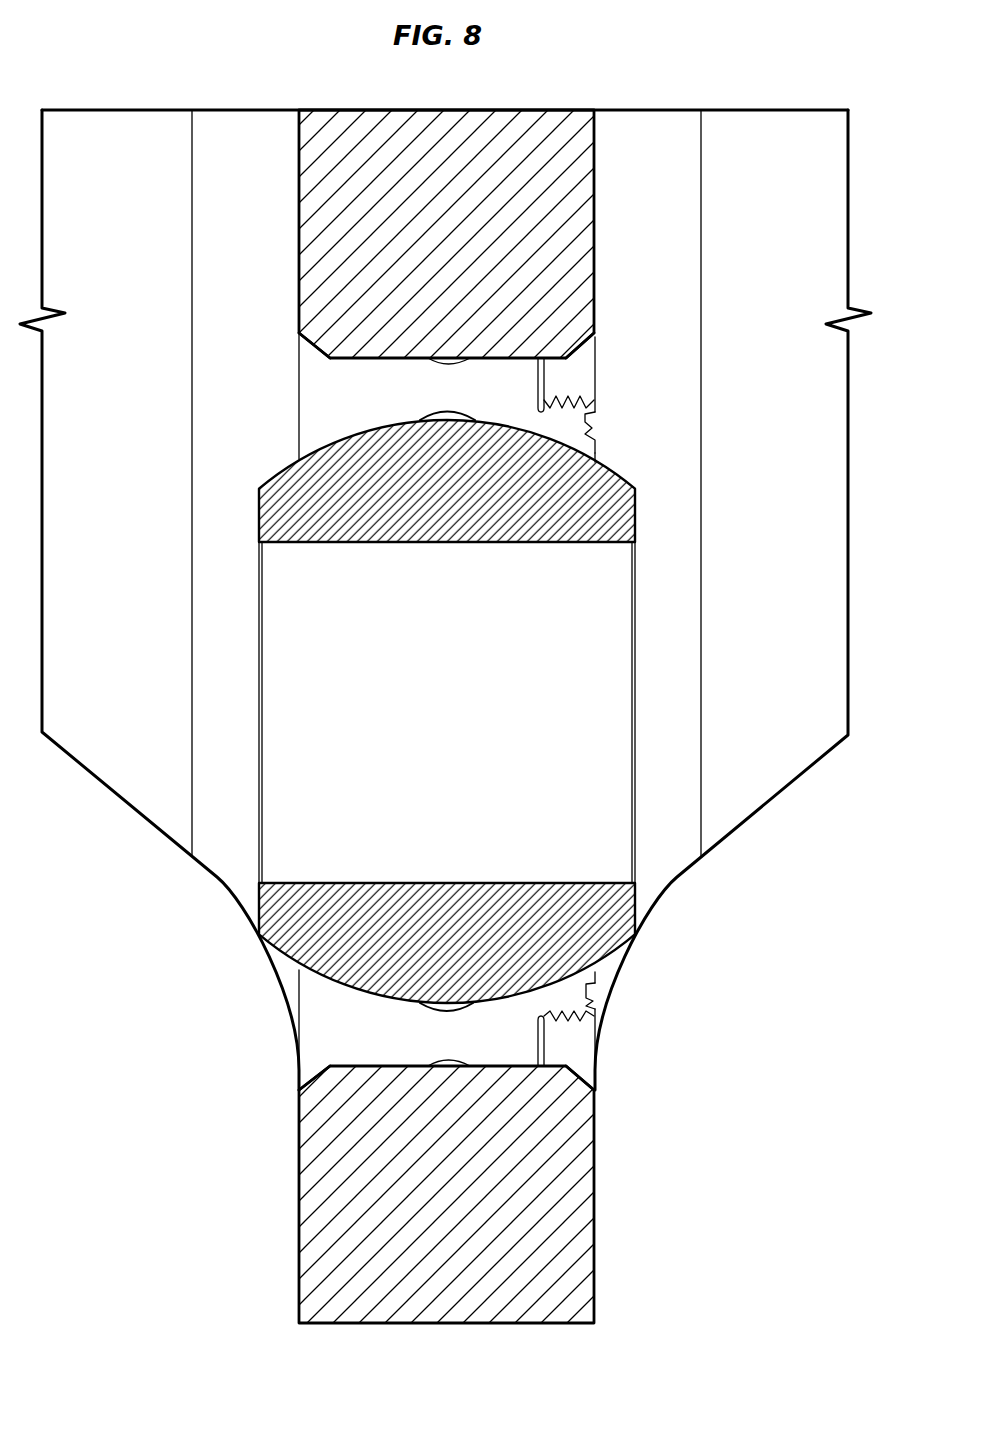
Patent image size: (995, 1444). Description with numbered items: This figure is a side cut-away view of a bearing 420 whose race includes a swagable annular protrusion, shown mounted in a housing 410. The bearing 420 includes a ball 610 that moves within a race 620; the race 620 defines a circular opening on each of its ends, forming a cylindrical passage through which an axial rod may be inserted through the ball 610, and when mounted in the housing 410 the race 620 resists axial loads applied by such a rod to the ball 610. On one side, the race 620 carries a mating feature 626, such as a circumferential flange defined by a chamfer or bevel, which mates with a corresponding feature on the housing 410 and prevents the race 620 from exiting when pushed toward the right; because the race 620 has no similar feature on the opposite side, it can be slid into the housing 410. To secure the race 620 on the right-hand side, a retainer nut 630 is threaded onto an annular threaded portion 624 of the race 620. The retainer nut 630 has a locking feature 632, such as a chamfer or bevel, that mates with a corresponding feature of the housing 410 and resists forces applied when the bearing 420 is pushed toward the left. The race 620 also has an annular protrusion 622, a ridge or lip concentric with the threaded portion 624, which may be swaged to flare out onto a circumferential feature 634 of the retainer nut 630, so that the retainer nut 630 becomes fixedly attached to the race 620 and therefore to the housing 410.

The housing 410 is at (299, 165).
The bearing 420 is at (135, 330).
The ball 610 is at (259, 518).
The race 620 is at (299, 416).
The annular protrusion 622 is at (595, 412).
The annular threaded portion 624 is at (578, 394).
The mating feature 626 is at (300, 352).
The retainer nut 630 is at (596, 358).
The locking feature 632 is at (588, 345).
The circumferential feature 634 is at (596, 1015).